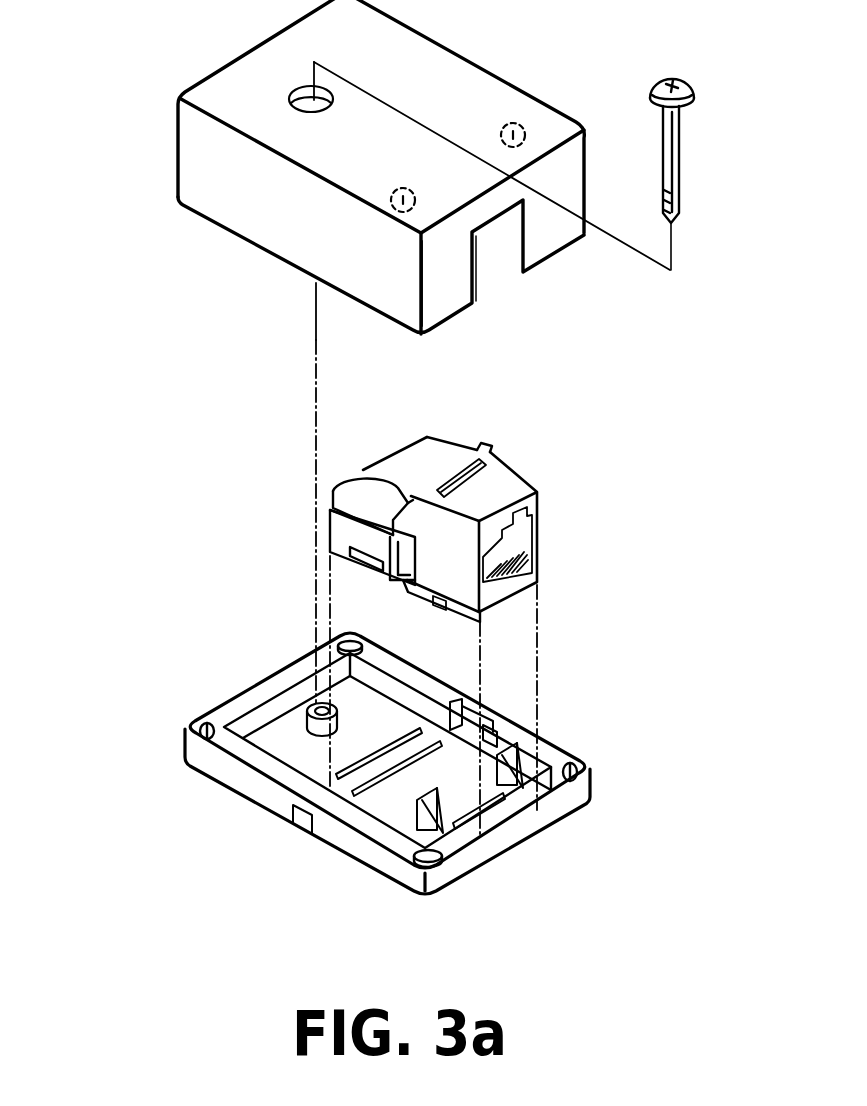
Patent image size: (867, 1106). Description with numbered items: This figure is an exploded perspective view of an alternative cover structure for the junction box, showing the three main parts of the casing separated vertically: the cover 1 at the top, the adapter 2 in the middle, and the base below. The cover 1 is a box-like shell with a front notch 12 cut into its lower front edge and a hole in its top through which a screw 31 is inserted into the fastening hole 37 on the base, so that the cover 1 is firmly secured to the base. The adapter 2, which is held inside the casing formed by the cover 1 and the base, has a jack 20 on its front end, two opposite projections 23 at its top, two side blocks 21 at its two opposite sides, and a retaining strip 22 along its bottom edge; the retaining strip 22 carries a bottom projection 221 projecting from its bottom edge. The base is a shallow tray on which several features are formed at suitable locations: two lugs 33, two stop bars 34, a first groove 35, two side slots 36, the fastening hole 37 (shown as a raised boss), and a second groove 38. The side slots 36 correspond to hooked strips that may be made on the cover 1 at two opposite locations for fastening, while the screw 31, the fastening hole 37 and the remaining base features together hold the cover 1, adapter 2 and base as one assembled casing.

The cover 1 is at (490, 100).
The front notch 12 is at (498, 262).
The screw 31 is at (681, 157).
The adapter 2 is at (507, 487).
The jack 20 is at (530, 507).
The side block 21 is at (410, 593).
The retaining strip 22 is at (450, 598).
The bottom projection 221 is at (440, 603).
The projection 23 is at (483, 443).
The lug 33 is at (497, 765).
The stop bar 34 is at (345, 790).
The first groove 35 is at (455, 830).
The side slot 36 is at (332, 830).
The fastening hole 37 is at (307, 708).
The second groove 38 is at (503, 817).